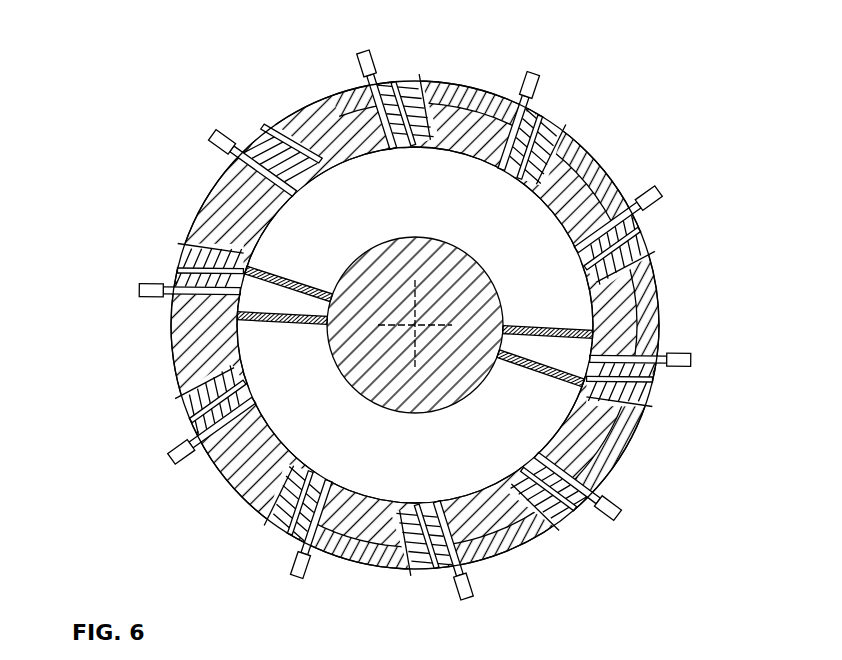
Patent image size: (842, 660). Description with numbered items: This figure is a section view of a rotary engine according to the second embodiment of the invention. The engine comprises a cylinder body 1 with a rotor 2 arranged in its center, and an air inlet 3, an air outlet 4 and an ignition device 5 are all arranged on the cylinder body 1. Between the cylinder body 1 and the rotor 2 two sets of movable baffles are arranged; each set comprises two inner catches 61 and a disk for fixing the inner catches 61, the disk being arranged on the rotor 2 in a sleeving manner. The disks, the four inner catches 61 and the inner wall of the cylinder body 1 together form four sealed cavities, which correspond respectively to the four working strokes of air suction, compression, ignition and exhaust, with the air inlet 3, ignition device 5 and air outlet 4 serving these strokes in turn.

The cylinder body 1 is at (222, 211).
The rotor 2 is at (347, 323).
The air inlet 3 is at (281, 114).
The air outlet 4 is at (255, 135).
The ignition device 5 is at (209, 136).
The inner catch 61 is at (560, 326).